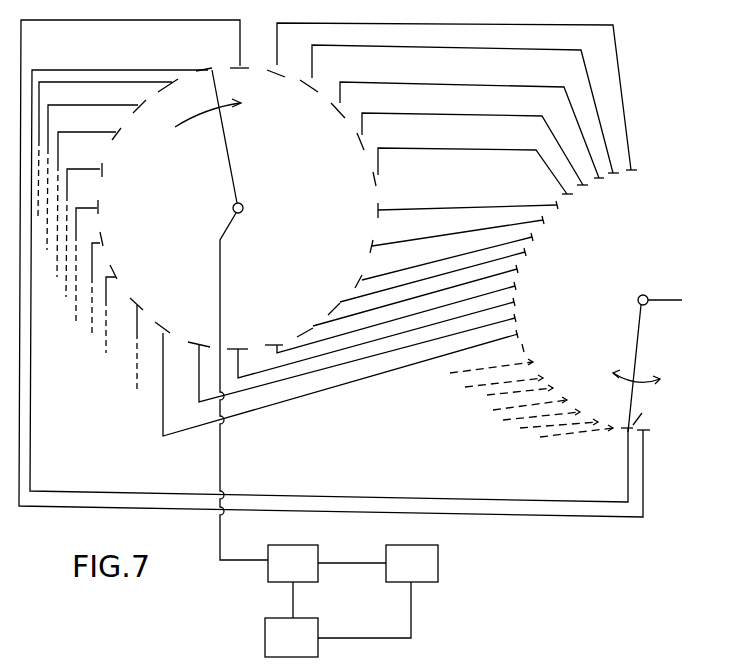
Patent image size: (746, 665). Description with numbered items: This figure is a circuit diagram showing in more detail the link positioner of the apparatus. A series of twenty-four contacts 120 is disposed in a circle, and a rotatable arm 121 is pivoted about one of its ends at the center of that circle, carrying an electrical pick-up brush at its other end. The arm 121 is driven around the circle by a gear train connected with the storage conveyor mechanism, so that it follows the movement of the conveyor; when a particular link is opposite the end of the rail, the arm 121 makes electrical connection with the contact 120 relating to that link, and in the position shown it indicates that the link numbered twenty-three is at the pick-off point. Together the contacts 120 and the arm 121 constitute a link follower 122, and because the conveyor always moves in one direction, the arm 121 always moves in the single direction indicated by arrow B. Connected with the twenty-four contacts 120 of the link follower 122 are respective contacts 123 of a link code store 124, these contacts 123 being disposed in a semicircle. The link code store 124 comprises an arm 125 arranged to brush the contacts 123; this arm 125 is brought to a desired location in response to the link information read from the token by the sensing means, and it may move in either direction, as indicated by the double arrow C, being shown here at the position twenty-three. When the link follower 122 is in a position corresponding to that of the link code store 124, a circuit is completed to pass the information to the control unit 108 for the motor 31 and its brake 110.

The motor 31 is at (421, 573).
The control unit 108 is at (307, 573).
The brake 110 is at (305, 646).
The contacts 120 is at (383, 201).
The rotatable arm 121 is at (232, 170).
The link follower 122 is at (304, 261).
The contacts 123 is at (617, 193).
The link code store 124 is at (617, 280).
The arm 125 is at (641, 337).